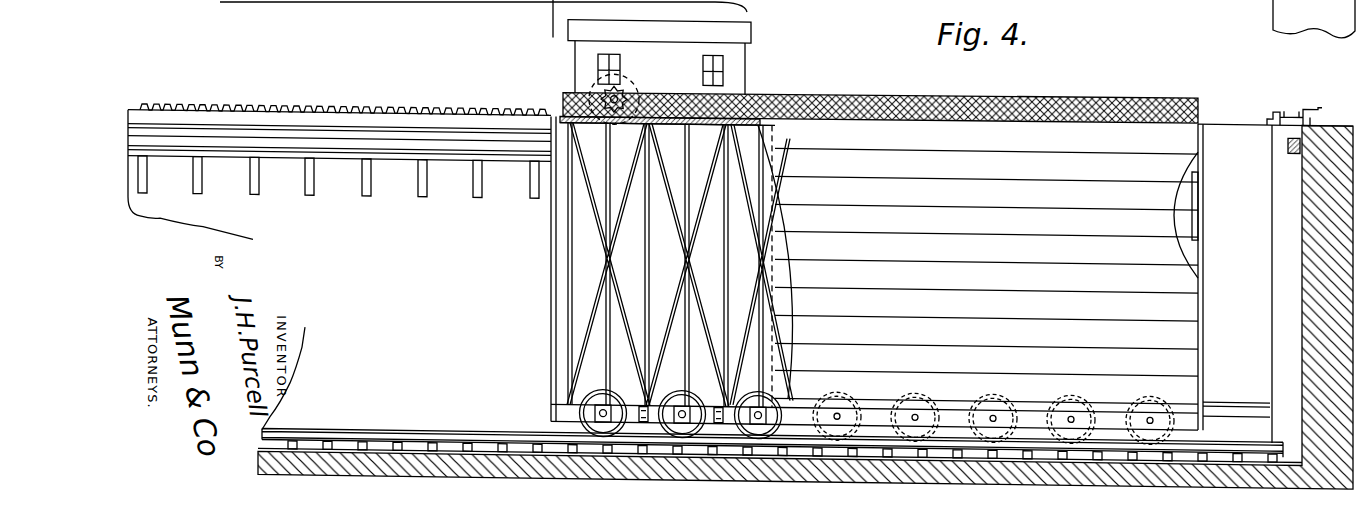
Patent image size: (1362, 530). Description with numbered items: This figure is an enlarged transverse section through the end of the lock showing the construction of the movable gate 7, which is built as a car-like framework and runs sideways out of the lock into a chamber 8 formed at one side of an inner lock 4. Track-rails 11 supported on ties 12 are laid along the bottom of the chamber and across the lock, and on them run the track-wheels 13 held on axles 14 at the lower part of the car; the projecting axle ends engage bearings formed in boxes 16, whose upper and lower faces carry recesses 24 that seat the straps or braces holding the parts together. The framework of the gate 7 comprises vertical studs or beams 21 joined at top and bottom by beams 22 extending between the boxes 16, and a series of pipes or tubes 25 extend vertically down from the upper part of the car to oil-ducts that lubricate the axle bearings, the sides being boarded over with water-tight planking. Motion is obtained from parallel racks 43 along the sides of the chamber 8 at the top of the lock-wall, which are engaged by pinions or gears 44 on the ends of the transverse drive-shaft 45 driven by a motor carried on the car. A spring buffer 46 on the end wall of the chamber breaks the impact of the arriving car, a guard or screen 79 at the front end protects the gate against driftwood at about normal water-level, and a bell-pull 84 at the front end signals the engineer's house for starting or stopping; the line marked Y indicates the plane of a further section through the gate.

The inner lock 4 is at (632, 316).
The gate 7 is at (690, 397).
The chamber 8 is at (273, 271).
The track-rails 11 is at (392, 437).
The ties 12 is at (530, 435).
The track-wheels 13 is at (603, 385).
The axles 14 is at (620, 396).
The boxes 16 is at (700, 400).
The vertical studs or beams 21 is at (650, 291).
The beams 22 is at (652, 413).
The recesses 24 is at (805, 300).
The pipes or tubes 25 is at (686, 219).
The racks 43 is at (356, 104).
The pinions or gears 44 is at (622, 89).
The drive-shaft 45 is at (645, 91).
The spring buffers 46 is at (1286, 134).
The guard or screen 79 is at (1205, 205).
The bell-pull 84 is at (1196, 82).
The cable Y is at (546, 28).